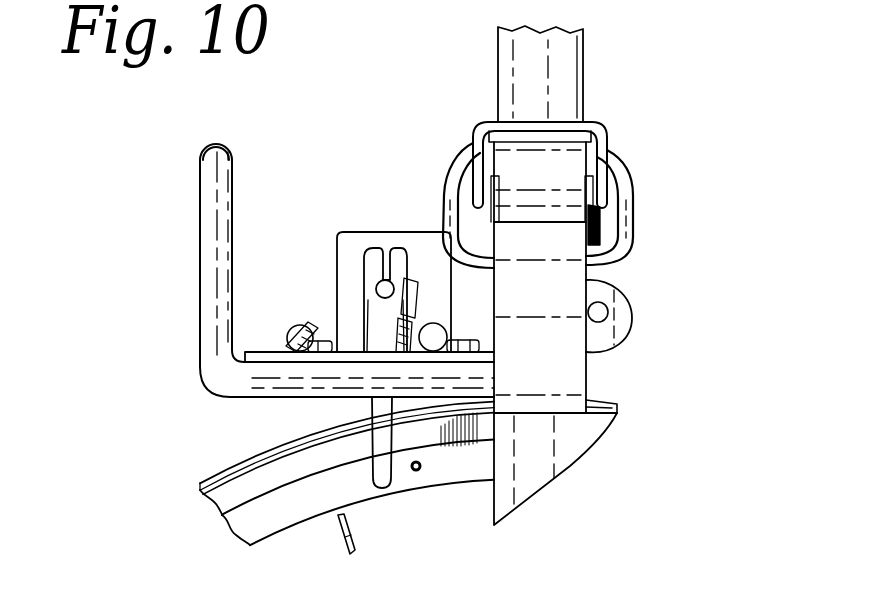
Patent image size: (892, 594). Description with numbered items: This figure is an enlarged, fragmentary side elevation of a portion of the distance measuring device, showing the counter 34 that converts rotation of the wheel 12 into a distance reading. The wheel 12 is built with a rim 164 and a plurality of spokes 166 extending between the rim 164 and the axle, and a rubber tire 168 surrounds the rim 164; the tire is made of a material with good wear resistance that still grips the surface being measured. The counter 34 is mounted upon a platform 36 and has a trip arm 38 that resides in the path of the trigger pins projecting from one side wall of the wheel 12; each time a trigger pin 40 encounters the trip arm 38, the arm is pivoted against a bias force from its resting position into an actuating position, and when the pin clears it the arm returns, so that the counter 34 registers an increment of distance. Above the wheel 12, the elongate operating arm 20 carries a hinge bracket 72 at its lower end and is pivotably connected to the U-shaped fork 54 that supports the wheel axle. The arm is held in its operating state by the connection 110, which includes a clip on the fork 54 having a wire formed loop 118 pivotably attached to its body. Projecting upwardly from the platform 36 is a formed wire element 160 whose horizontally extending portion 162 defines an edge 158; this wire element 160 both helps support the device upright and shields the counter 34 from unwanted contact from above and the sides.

The wheel 12 is at (296, 513).
The elongate operating arm 20 is at (563, 95).
The counter 34 is at (363, 234).
The platform 36 is at (264, 350).
The trip arm 38 is at (380, 447).
The trigger pin 40 is at (423, 467).
The U-shaped fork 54 is at (548, 438).
The hinge bracket 72 is at (577, 128).
The connection 110 is at (615, 237).
The wire formed loop 118 is at (634, 196).
The edge 158 is at (228, 147).
The formed wire element 160 is at (200, 252).
The horizontally extending portion 162 is at (235, 158).
The rim 164 is at (231, 525).
The spokes 166 is at (357, 530).
The rubber tire 168 is at (198, 483).